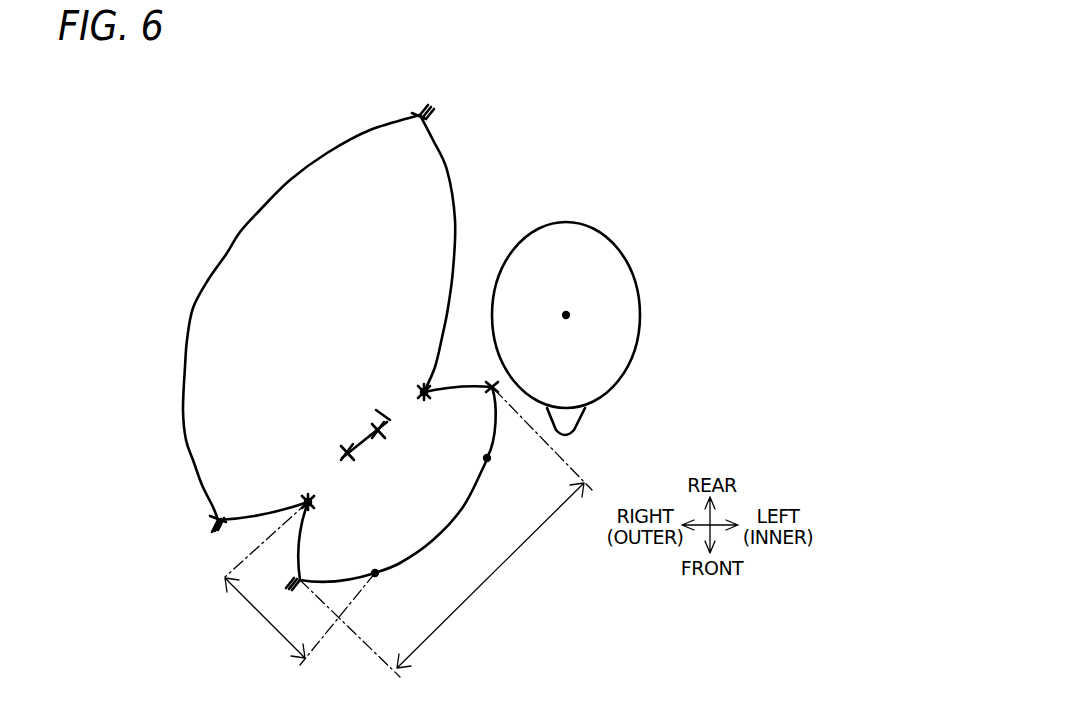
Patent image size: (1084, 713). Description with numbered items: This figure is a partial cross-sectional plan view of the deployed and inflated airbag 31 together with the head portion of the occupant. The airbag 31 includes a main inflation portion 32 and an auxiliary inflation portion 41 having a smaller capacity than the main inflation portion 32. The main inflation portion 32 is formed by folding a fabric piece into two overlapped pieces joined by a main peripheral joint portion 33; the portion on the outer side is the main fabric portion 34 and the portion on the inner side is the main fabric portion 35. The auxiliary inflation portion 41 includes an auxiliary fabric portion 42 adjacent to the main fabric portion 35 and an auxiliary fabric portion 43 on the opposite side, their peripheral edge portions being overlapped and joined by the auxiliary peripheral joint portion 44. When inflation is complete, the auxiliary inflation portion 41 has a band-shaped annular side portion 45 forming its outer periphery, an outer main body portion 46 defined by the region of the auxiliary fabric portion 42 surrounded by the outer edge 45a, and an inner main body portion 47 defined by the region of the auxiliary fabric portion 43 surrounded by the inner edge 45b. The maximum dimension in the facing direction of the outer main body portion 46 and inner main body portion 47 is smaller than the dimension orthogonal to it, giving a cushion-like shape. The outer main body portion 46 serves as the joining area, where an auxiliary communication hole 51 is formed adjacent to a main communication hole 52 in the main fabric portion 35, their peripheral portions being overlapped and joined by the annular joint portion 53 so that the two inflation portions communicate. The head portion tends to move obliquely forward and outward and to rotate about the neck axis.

The airbag 31 is at (199, 601).
The main inflation portion 32 is at (271, 317).
The main peripheral joint portion 33 is at (421, 112).
The main fabric portion 34 is at (231, 240).
The main fabric portion 35 is at (452, 172).
The auxiliary inflation portion 41 is at (396, 484).
The auxiliary fabric portion 42 is at (298, 556).
The auxiliary fabric portion 43 is at (442, 540).
The auxiliary peripheral joint portion 44 is at (490, 392).
The annular side portion 45 is at (495, 412).
The outer edge 45a is at (424, 384).
The inner edge 45b is at (490, 460).
The outer main body portion 46 is at (360, 447).
The inner main body portion 47 is at (468, 510).
The auxiliary communication hole 51 is at (423, 400).
The main communication hole 52 is at (381, 420).
The annular joint portion 53 is at (407, 392).